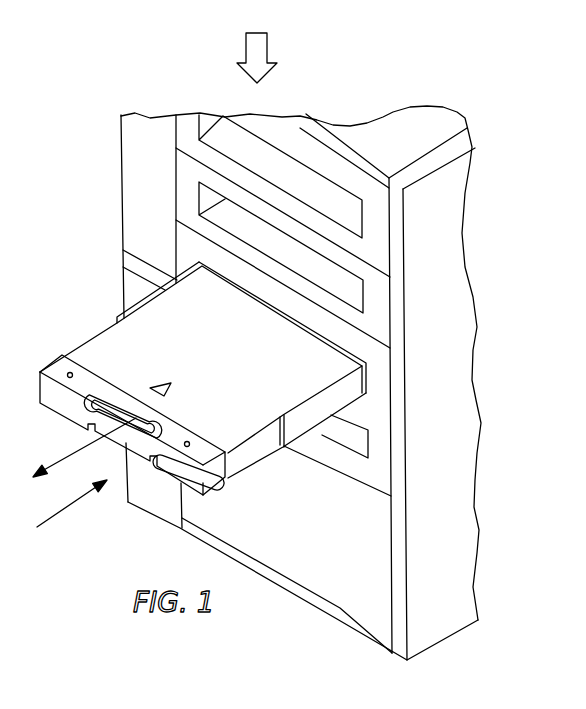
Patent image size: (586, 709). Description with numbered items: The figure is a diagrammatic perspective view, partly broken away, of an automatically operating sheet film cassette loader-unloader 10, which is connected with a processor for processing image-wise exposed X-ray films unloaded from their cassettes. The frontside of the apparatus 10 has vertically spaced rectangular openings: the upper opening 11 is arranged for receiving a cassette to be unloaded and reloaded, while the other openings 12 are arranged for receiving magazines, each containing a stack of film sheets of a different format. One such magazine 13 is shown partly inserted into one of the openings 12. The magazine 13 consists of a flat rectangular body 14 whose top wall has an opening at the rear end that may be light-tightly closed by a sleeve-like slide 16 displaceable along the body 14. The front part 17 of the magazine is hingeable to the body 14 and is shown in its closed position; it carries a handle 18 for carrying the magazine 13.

The cassette loader-unloader 10 is at (262, 49).
The upper opening 11 is at (358, 221).
The other openings 12 is at (362, 436).
The magazine 13 is at (72, 333).
The body 14 is at (250, 452).
The sleeve-like slide 16 is at (307, 420).
The front part 17 is at (53, 400).
The handle 18 is at (128, 442).